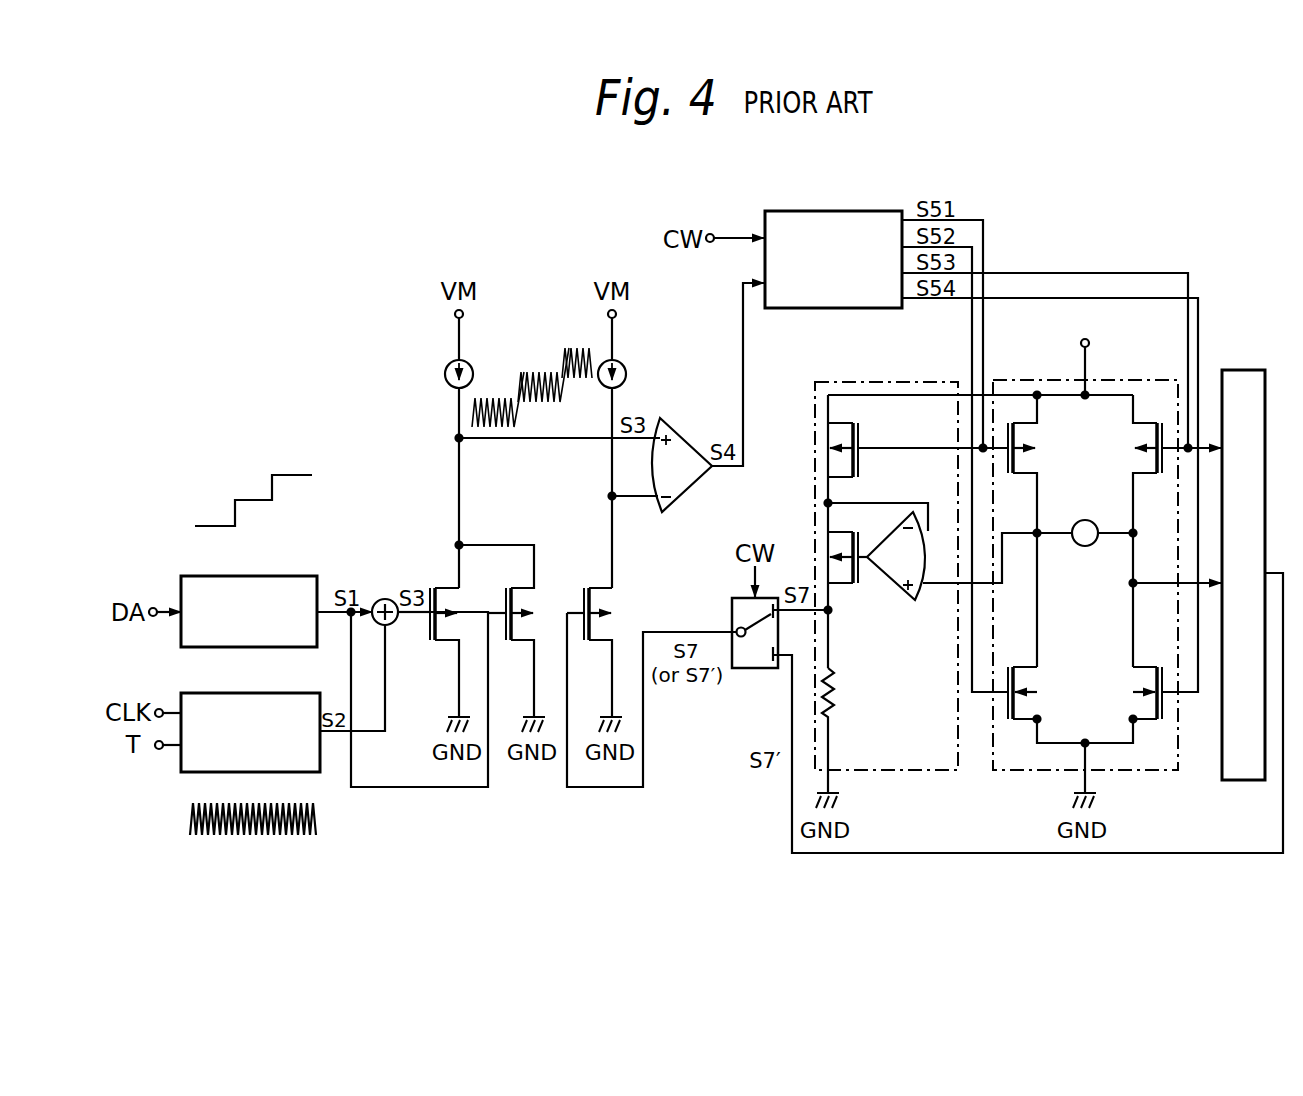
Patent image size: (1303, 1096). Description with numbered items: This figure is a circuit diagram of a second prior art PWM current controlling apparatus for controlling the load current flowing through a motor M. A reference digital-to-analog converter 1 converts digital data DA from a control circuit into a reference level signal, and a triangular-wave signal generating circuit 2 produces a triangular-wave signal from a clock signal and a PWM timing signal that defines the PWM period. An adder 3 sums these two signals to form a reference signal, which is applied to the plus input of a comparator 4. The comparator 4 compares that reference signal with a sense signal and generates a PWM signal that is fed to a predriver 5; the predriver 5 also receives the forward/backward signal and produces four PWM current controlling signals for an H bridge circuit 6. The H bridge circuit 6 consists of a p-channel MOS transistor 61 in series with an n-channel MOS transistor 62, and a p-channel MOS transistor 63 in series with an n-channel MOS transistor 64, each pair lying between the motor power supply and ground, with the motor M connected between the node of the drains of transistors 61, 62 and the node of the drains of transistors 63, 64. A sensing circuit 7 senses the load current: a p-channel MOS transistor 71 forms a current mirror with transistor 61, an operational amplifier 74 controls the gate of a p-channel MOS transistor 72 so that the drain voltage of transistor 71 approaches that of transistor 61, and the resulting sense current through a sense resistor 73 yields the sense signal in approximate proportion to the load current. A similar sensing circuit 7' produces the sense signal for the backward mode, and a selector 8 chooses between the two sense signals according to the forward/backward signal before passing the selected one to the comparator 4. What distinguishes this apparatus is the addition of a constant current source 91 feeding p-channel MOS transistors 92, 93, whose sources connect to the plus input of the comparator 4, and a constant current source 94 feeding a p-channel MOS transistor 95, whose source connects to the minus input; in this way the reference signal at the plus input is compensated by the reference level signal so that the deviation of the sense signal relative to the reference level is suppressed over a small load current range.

The reference digital-to-analog converter 1 is at (245, 575).
The triangular-wave signal generating circuit 2 is at (250, 692).
The adder 3 is at (384, 598).
The comparator 4 is at (684, 440).
The predriver 5 is at (815, 211).
The H bridge circuit 6 is at (1147, 378).
The sensing circuit 7 is at (926, 558).
The sensing circuit 7' is at (1244, 548).
The selector 8 is at (730, 614).
The p-channel MOS transistor 61 is at (1022, 477).
The n-channel MOS transistor 62 is at (1018, 667).
The p-channel MOS transistor 63 is at (1148, 477).
The n-channel MOS transistor 64 is at (1150, 667).
The p-channel MOS transistor 71 is at (862, 433).
The p-channel MOS transistor 72 is at (860, 552).
The sense resistor 73 is at (835, 671).
The operational amplifier 74 is at (892, 580).
The constant current source 91 is at (470, 362).
The p-channel MOS transistor 92 is at (445, 588).
The p-channel MOS transistor 93 is at (524, 588).
The constant current source 94 is at (623, 362).
The p-channel MOS transistor 95 is at (599, 588).